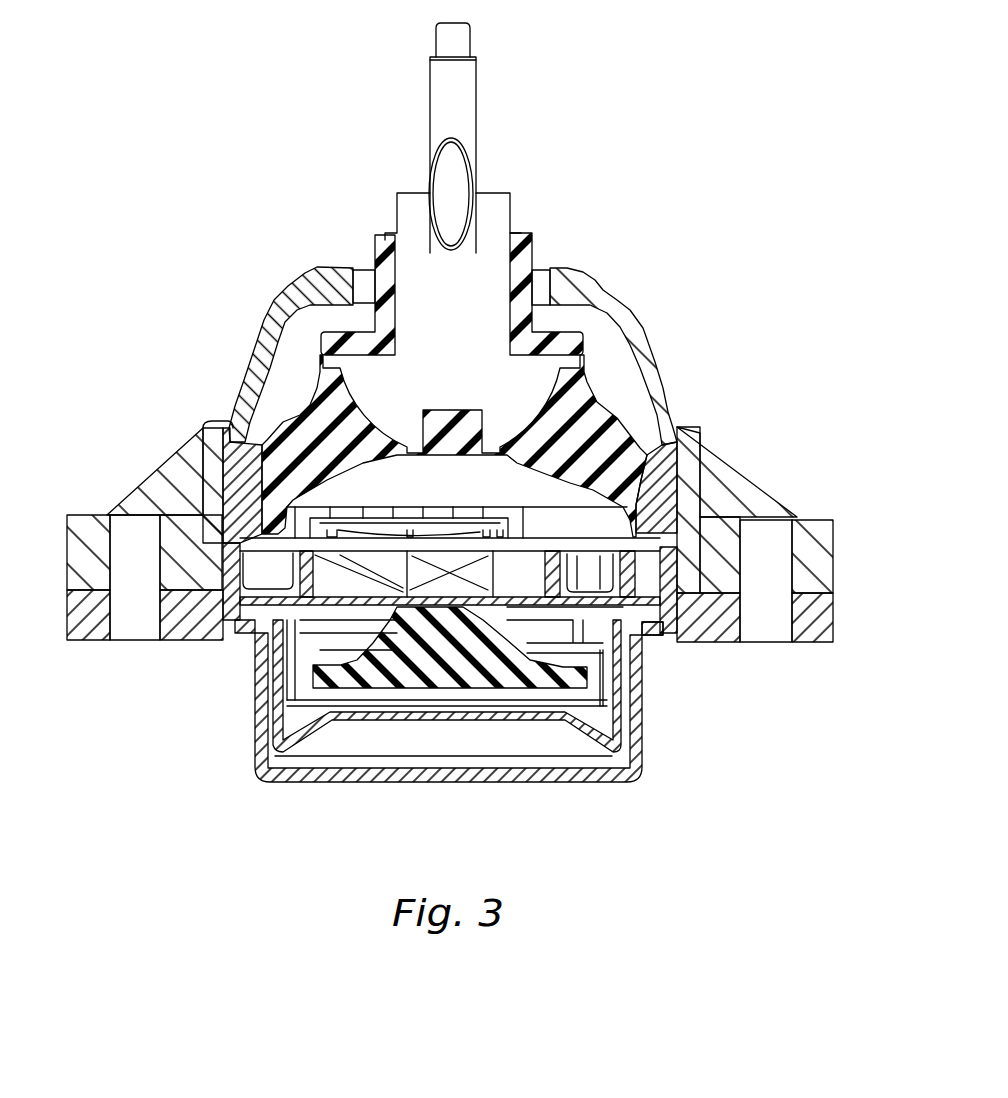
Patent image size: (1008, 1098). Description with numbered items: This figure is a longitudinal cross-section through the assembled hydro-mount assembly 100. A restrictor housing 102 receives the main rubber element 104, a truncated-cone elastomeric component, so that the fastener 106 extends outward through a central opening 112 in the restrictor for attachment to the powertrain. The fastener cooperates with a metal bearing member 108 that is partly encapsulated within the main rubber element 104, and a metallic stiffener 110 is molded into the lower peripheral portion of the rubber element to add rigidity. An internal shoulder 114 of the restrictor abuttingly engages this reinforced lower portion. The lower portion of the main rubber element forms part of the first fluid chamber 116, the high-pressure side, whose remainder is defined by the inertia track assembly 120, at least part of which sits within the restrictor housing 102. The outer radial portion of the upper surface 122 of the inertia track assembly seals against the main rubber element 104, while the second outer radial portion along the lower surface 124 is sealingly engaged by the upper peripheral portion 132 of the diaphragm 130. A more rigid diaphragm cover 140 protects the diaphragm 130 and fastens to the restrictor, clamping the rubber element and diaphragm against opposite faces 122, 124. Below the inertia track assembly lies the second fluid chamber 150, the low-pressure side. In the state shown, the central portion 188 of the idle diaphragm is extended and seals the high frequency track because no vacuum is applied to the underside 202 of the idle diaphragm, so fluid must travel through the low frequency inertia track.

The hydro-mount assembly 100 is at (675, 282).
The restrictor housing 102 is at (650, 350).
The main rubber element 104 is at (603, 413).
The fastener 106 is at (470, 87).
The metal bearing member 108 is at (500, 214).
The metallic stiffener 110 is at (673, 492).
The central opening 112 is at (540, 278).
The internal shoulder 114 is at (690, 428).
The first fluid chamber 116 is at (266, 396).
The inertia track assembly 120 is at (690, 560).
The outer radial portion of upper surface 122 is at (247, 540).
The second outer radial portion of lower surface 124 is at (660, 630).
The diaphragm 130 is at (600, 728).
The upper peripheral portion 132 is at (648, 632).
The diaphragm cover 140 is at (614, 780).
The second fluid chamber 150 is at (307, 643).
The central portion of idle diaphragm 188 is at (425, 612).
The underside of idle diaphragm 202 is at (293, 697).